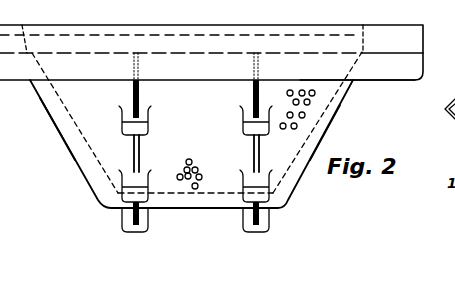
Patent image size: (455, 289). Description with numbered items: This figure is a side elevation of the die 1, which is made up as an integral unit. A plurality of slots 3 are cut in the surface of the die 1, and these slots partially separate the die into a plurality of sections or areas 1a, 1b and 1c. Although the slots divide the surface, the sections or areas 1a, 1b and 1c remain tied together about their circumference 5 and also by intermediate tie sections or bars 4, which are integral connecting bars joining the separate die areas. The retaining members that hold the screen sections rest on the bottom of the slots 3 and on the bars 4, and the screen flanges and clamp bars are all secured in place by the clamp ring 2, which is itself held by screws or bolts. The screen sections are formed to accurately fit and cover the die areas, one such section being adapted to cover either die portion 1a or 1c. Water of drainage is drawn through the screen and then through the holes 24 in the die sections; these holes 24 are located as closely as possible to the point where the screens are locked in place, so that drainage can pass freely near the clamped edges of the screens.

The die 1 is at (187, 68).
The die section 1a is at (90, 182).
The die section 1b is at (200, 200).
The die section 1c is at (290, 178).
The clamp ring 2 is at (412, 40).
The slots 3 is at (140, 152).
The tie sections or bars 4 is at (148, 118).
The circumference 5 is at (392, 70).
The holes 24 is at (315, 93).